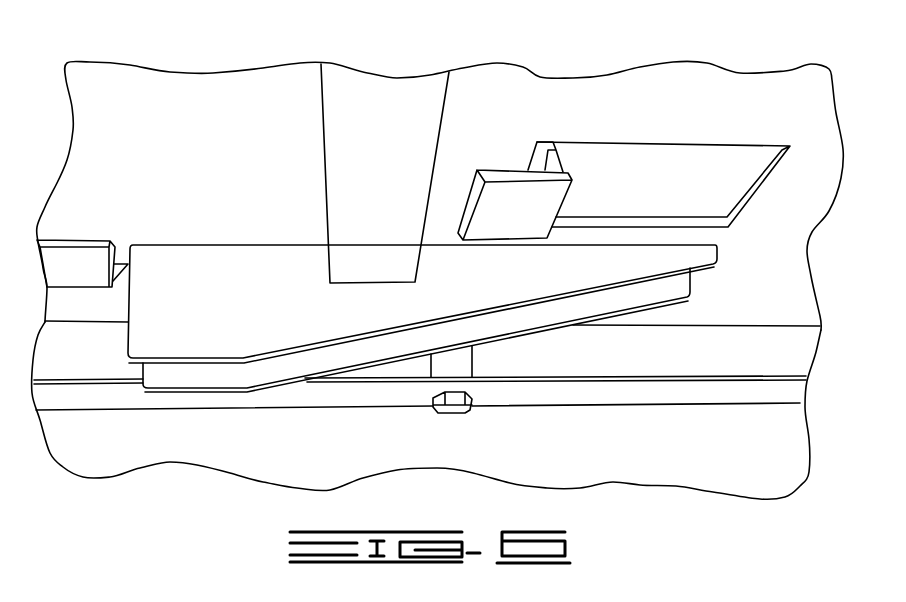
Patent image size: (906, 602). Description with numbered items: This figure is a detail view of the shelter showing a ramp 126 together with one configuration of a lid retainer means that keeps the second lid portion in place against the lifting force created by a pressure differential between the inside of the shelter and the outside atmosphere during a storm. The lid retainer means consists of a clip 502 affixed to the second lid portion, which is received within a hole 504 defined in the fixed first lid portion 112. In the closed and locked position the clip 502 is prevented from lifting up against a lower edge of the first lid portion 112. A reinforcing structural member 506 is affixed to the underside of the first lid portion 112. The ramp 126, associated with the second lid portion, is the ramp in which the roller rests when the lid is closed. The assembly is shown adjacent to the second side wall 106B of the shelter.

The first lid portion 112 is at (210, 144).
The reinforcing structural member 506 is at (365, 115).
The clip 502 is at (507, 167).
The hole 504 is at (677, 193).
The ramp 126 is at (233, 314).
The second side wall 106B is at (580, 463).